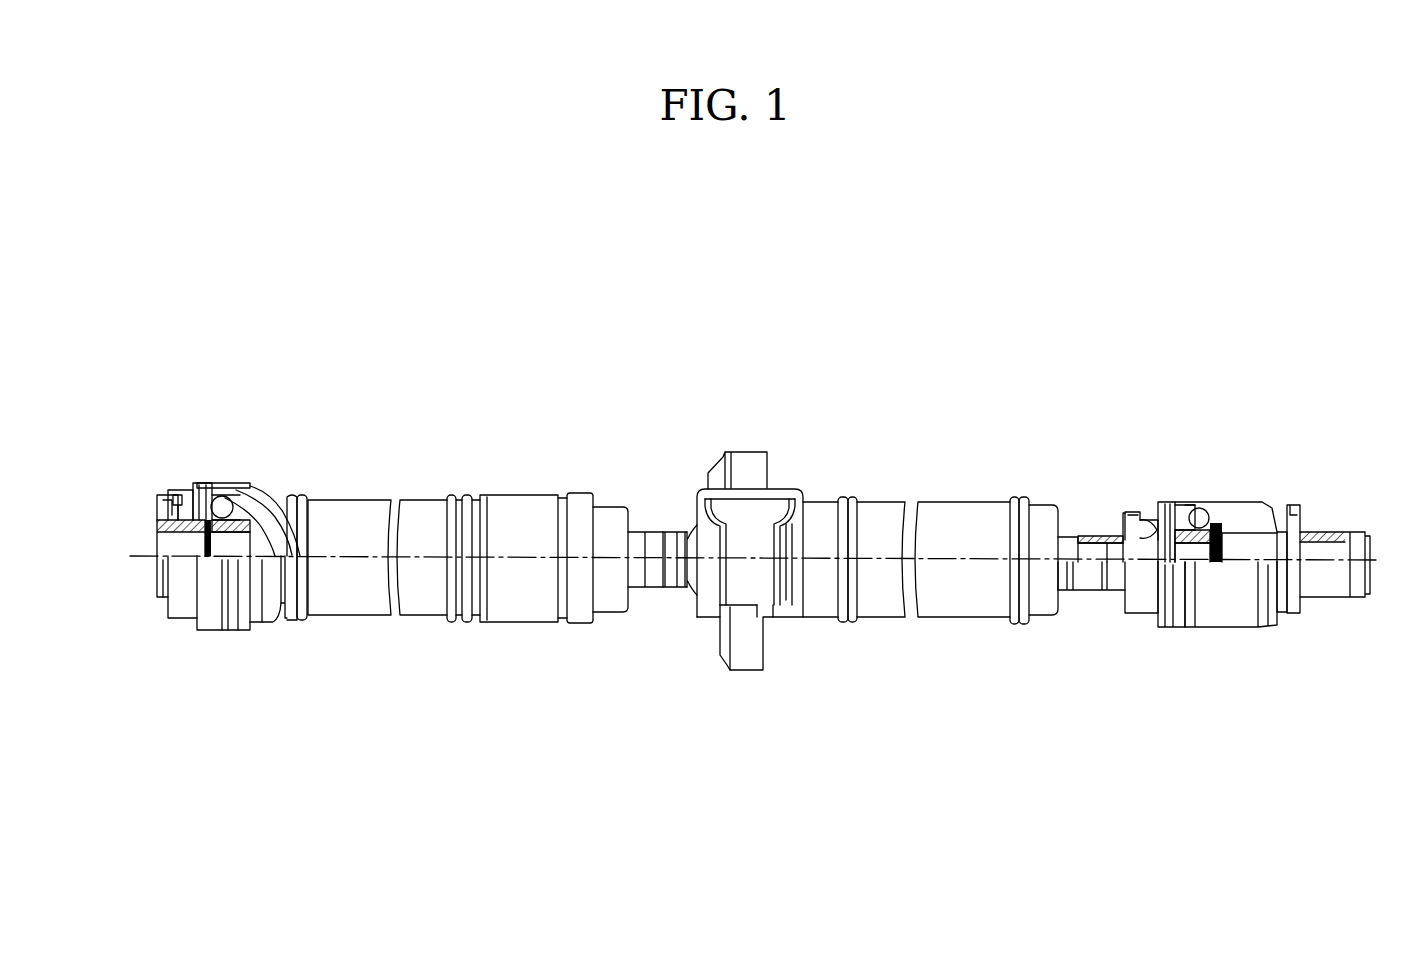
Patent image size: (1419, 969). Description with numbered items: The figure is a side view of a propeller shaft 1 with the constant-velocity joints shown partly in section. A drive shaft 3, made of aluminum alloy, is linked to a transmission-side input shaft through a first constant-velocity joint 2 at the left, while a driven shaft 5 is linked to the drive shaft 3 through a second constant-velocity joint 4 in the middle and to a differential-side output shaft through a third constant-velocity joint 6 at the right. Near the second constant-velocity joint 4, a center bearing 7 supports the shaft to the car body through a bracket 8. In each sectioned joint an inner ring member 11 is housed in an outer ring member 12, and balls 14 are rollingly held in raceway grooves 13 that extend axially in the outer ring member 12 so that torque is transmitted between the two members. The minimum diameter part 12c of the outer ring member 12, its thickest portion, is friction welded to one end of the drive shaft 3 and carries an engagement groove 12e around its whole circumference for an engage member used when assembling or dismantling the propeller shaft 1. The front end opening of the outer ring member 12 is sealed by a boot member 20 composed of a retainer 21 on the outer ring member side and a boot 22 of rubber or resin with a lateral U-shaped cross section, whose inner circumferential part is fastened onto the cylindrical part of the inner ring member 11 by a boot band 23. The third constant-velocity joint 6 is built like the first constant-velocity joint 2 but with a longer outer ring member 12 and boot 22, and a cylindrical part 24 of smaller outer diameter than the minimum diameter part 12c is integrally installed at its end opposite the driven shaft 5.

The propeller shaft 1 is at (360, 303).
The first constant-velocity joint 2 is at (232, 428).
The drive shaft 3 is at (365, 498).
The second constant-velocity joint 4 is at (517, 495).
The driven shaft 5 is at (882, 500).
The third constant-velocity joint 6 is at (1248, 452).
The center bearing 7 is at (775, 620).
The bracket 8 is at (742, 668).
The inner ring member 11 is at (227, 533).
The outer ring member 12 is at (255, 490).
The minimum diameter part 12c is at (292, 493).
The engagement groove 12e is at (272, 500).
The raceway grooves 13 is at (203, 494).
The balls 14 is at (223, 505).
The boot member 20 is at (115, 428).
The retainer 21 is at (193, 490).
The boot 22 is at (165, 505).
The boot band 23 is at (165, 508).
The cylindrical part 24 is at (1347, 532).